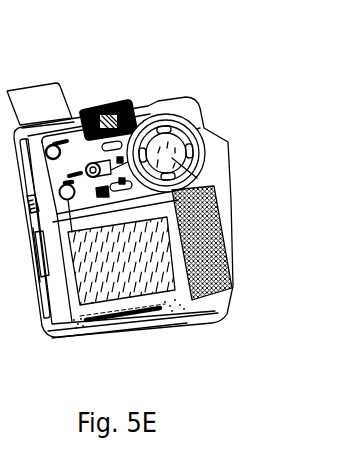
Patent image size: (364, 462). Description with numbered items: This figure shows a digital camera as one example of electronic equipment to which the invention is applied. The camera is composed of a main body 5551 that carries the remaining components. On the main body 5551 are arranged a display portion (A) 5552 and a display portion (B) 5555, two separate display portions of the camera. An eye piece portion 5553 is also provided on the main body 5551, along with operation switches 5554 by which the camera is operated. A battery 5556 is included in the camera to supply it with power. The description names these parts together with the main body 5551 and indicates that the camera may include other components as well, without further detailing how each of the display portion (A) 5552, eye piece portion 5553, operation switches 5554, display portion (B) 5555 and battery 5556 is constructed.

The main body 5551 is at (230, 267).
The display portion (A) 5552 is at (98, 332).
The eye piece portion 5553 is at (147, 100).
The operation switches 5554 is at (198, 157).
The display portion (B) 5555 is at (212, 193).
The battery 5556 is at (200, 318).